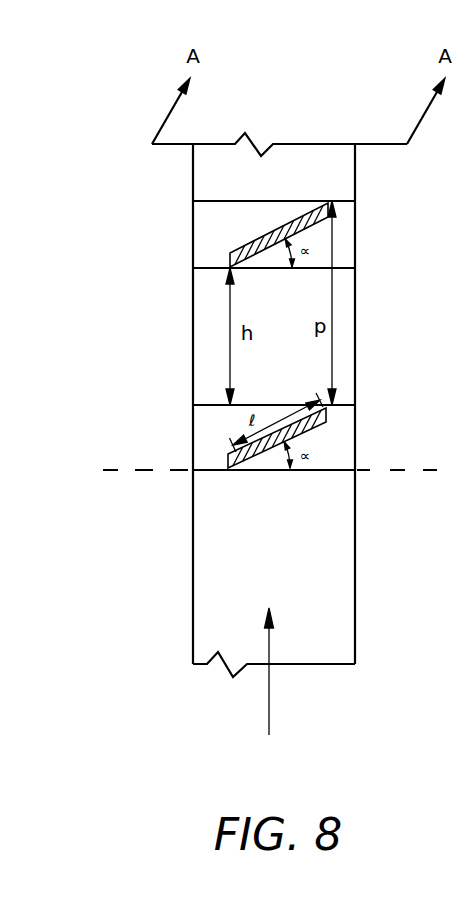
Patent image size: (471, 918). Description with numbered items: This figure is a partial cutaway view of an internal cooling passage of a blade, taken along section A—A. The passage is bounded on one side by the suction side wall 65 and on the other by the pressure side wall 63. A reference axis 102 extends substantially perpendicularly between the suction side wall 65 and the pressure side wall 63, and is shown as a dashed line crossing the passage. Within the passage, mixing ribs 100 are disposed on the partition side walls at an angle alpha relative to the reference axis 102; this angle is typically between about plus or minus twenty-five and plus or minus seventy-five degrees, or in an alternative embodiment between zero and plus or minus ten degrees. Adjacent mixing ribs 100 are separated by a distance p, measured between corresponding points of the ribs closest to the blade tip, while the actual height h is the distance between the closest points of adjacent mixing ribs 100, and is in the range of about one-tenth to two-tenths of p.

The pressure side wall 63 is at (356, 323).
The suction side wall 65 is at (193, 375).
The mixing rib 100 is at (247, 240).
The reference axis 102 is at (150, 470).